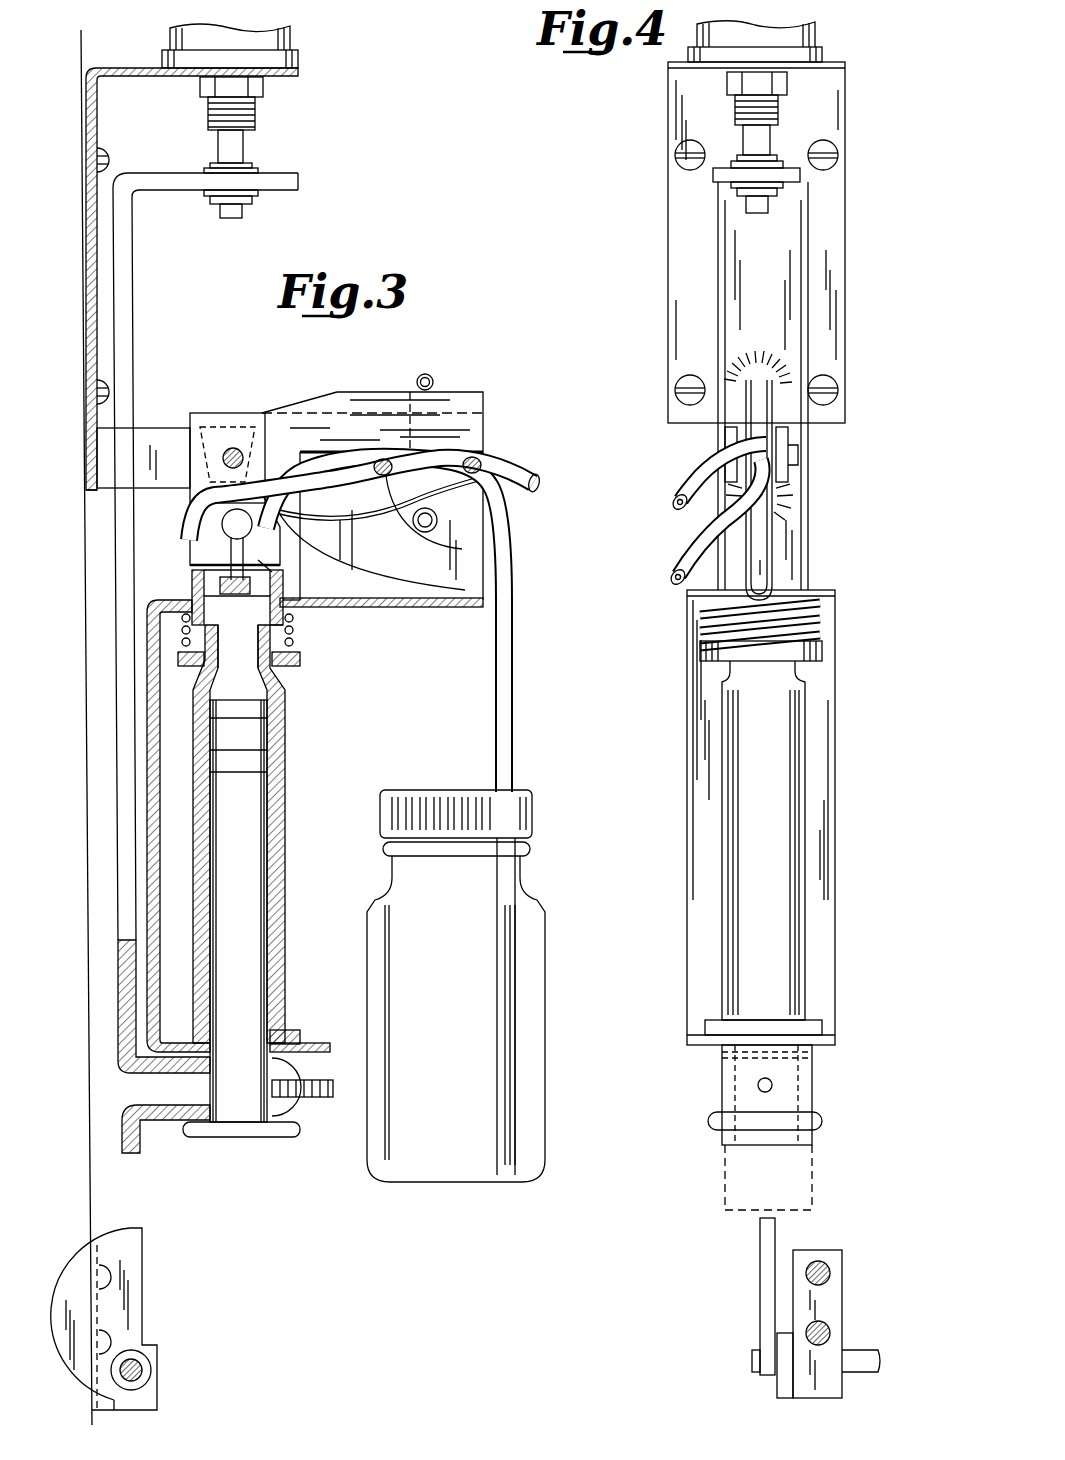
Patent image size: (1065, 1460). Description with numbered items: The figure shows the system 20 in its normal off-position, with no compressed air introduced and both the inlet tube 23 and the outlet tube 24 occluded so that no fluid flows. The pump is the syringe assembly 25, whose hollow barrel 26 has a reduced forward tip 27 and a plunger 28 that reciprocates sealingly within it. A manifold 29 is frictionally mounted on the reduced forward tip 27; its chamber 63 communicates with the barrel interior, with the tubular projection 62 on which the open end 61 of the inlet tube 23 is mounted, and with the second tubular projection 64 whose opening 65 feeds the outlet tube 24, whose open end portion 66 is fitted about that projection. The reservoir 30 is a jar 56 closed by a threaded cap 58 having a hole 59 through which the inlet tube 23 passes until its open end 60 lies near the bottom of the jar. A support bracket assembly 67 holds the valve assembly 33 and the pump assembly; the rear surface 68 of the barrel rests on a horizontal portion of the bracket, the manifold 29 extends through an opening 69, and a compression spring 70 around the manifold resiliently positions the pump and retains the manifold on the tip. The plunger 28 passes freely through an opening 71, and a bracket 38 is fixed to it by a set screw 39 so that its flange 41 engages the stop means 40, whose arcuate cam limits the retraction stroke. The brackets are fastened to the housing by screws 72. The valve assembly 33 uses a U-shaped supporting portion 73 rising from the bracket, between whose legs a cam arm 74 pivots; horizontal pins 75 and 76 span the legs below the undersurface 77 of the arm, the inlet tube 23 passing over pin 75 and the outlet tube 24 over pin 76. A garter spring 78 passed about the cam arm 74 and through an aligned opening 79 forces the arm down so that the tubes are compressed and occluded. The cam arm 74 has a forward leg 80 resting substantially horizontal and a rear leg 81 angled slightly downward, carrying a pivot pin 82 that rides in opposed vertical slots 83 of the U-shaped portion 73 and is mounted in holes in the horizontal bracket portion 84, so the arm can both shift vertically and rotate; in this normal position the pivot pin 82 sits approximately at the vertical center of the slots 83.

In FIG. 3, the system 20 is at (467, 320).
In FIG. 3, the inlet tube 23 is at (512, 672).
In FIG. 3, the outlet tube 24 is at (470, 592).
In FIG. 3, the syringe assembly 25 is at (290, 802).
In FIG. 3, the hollow barrel 26 is at (284, 874).
In FIG. 3, the reduced forward tip 27 is at (258, 685).
In FIG. 3, the plunger 28 is at (258, 932).
In FIG. 3, the manifold 29 is at (275, 672).
In FIG. 3, the reservoir 30 is at (496, 989).
In FIG. 3, the valve assembly 33 is at (408, 378).
In FIG. 3, the bracket 38 is at (117, 690).
In FIG. 3, the set screw 39 is at (322, 1098).
In FIG. 3, the stop means 40 is at (70, 1258).
In FIG. 3, the flange 41 is at (140, 1152).
In FIG. 4, the flange 41 is at (796, 1145).
In FIG. 3, the jar 56 is at (548, 1052).
In FIG. 3, the cap 58 is at (534, 818).
In FIG. 3, the hole 59 is at (520, 790).
In FIG. 3, the open end 60 is at (495, 1182).
In FIG. 3, the open end 61 is at (272, 575).
In FIG. 3, the tubular projection 62 is at (287, 608).
In FIG. 3, the chamber 63 is at (190, 605).
In FIG. 3, the second tubular projection 64 is at (200, 588).
In FIG. 3, the opening 65 is at (195, 582).
In FIG. 3, the open end portion 66 is at (210, 548).
In FIG. 3, the support bracket assembly 67 is at (448, 616).
In FIG. 3, the rear surface 68 is at (290, 1036).
In FIG. 3, the opening 69 is at (287, 632).
In FIG. 3, the compression spring 70 is at (288, 660).
In FIG. 3, the opening 71 is at (295, 1050).
In FIG. 3, the screws 72 is at (95, 390).
In FIG. 4, the U-shaped supporting portion 73 is at (777, 562).
In FIG. 3, the cam arm 74 is at (487, 392).
In FIG. 3, the pin 75 is at (465, 548).
In FIG. 3, the pin 76 is at (528, 474).
In FIG. 3, the undersurface 77 is at (452, 458).
In FIG. 3, the garter spring 78 is at (432, 380).
In FIG. 3, the aligned opening 79 is at (440, 520).
In FIG. 3, the forward leg 80 is at (358, 398).
In FIG. 3, the rear leg 81 is at (292, 412).
In FIG. 3, the pivot pin 82 is at (230, 448).
In FIG. 3, the vertical slots 83 is at (240, 448).
In FIG. 3, the bracket portion 84 is at (150, 430).